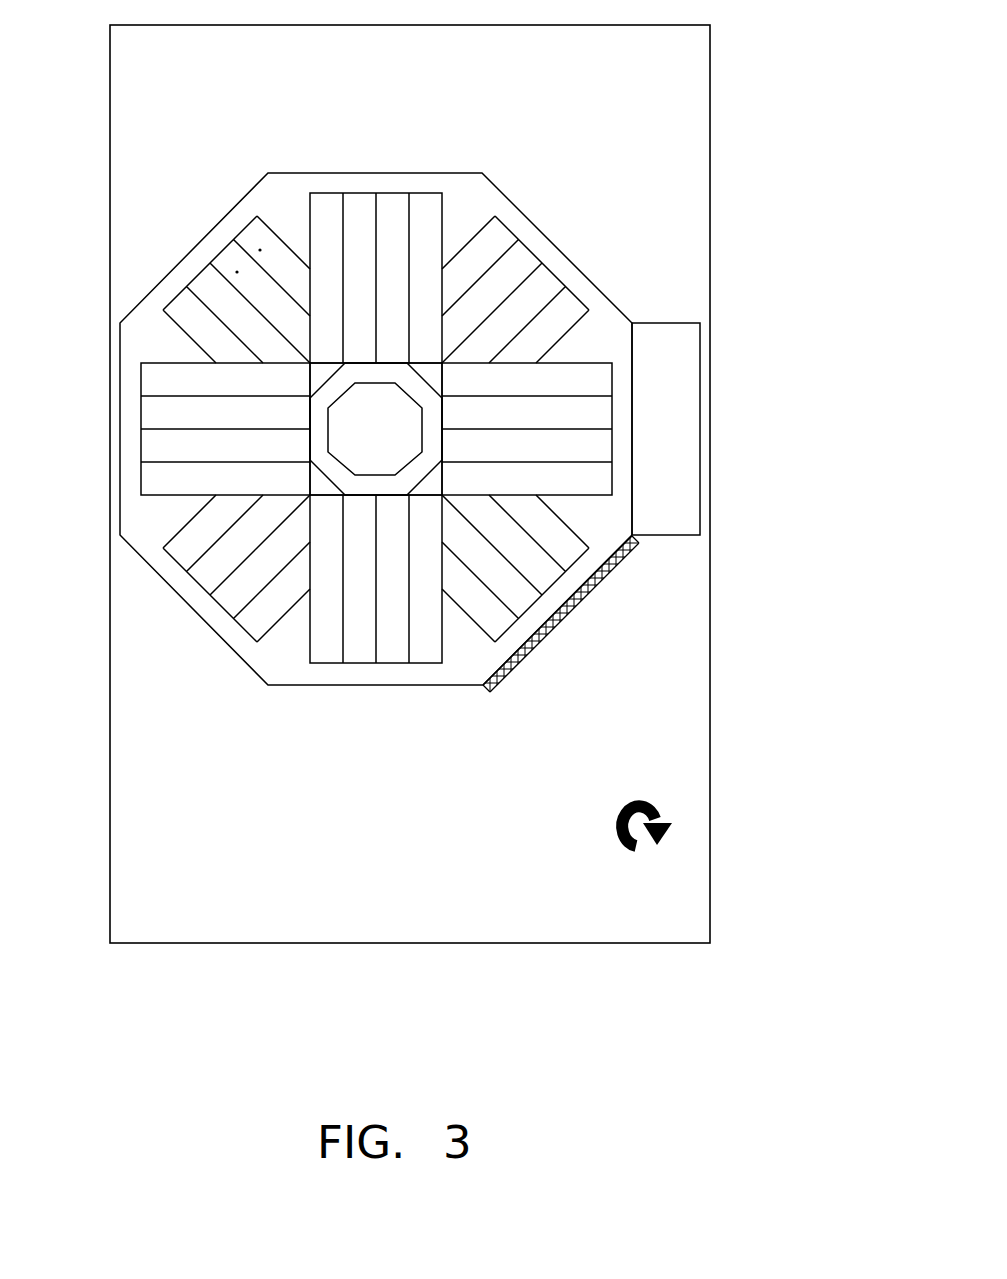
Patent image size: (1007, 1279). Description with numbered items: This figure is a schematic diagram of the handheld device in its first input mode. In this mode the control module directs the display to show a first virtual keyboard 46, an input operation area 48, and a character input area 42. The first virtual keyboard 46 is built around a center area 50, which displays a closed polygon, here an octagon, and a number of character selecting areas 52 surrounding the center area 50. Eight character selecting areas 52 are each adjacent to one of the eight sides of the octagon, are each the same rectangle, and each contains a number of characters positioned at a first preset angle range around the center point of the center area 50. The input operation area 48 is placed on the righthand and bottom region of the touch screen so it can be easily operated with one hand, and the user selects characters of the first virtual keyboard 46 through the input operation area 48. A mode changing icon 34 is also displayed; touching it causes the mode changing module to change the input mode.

The character input area 42 is at (677, 81).
The first virtual keyboard 46 is at (414, 389).
The input operation area 48 is at (518, 817).
The center area 50 is at (370, 415).
The character selecting area 52 is at (363, 203).
The mode changing icon 34 is at (660, 808).